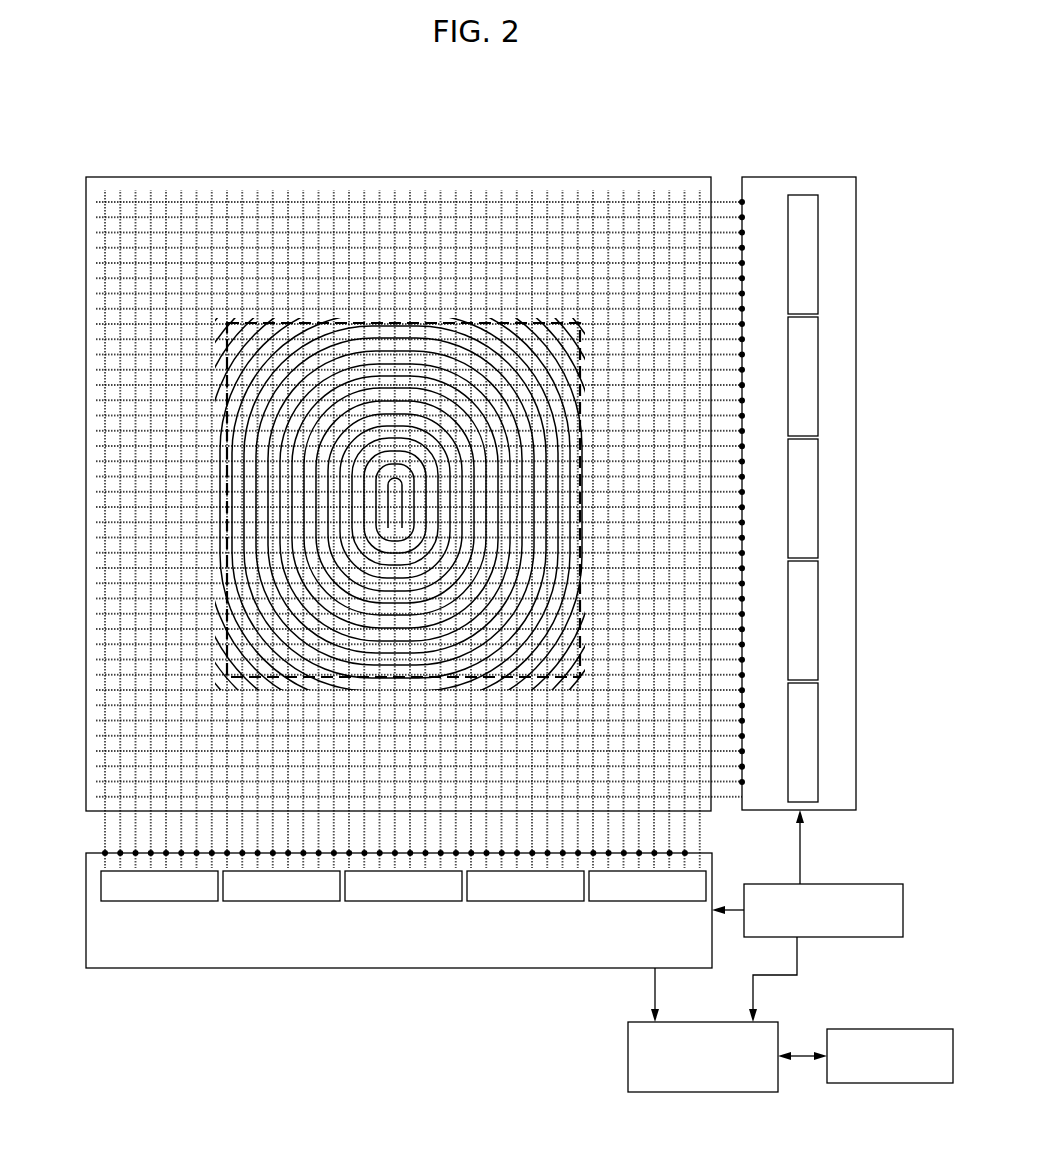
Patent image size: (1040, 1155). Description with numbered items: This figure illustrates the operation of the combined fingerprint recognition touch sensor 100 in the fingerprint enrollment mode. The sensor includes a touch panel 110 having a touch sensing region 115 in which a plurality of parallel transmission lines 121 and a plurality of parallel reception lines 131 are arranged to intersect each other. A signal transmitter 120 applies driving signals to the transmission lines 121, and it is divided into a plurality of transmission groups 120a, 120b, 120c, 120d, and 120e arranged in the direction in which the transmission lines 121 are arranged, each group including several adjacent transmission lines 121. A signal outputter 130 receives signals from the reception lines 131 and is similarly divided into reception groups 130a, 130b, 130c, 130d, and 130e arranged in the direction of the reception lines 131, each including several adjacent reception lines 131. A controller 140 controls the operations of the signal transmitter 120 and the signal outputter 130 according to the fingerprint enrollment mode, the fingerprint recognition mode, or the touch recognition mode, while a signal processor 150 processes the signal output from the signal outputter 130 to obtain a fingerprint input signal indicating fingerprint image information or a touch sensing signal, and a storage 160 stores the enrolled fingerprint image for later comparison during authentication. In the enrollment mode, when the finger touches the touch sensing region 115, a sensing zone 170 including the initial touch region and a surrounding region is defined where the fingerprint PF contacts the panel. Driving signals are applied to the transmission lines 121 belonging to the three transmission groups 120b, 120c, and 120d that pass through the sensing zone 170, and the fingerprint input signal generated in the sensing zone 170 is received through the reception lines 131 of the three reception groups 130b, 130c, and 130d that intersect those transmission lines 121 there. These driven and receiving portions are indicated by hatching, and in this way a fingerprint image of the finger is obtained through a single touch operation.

The combined fingerprint recognition touch sensor 100 is at (684, 106).
The touch panel 110 is at (372, 177).
The touch sensing region 115 is at (617, 213).
The signal transmitter 120 is at (799, 177).
The transmission group 120a is at (818, 736).
The transmission group 120b is at (818, 621).
The transmission group 120c is at (818, 503).
The transmission group 120d is at (818, 343).
The transmission group 120e is at (818, 258).
The transmission lines 121 is at (723, 200).
The signal outputter 130 is at (100, 968).
The reception group 130a is at (165, 901).
The reception group 130b is at (274, 901).
The reception group 130c is at (384, 901).
The reception group 130d is at (533, 901).
The reception group 130e is at (606, 901).
The reception lines 131 is at (104, 828).
The controller 140 is at (866, 884).
The signal processor 150 is at (700, 1092).
The storage 160 is at (890, 1083).
The sensing zone 170 is at (240, 322).
The fingerprint PF is at (215, 420).